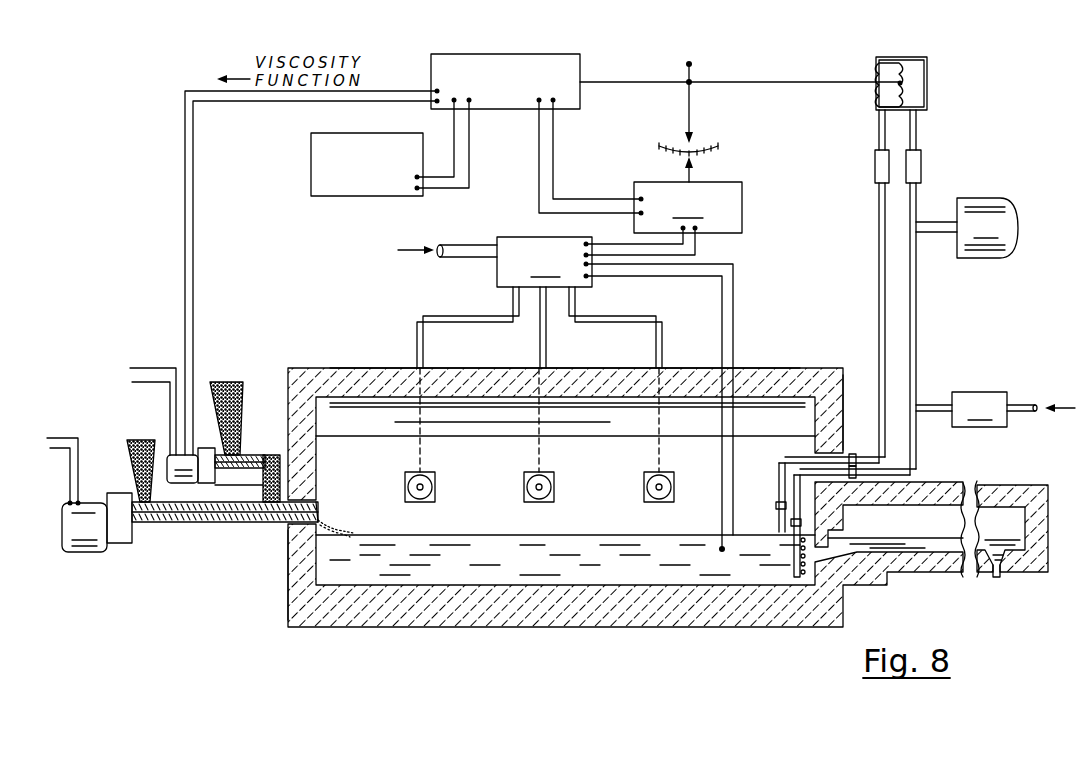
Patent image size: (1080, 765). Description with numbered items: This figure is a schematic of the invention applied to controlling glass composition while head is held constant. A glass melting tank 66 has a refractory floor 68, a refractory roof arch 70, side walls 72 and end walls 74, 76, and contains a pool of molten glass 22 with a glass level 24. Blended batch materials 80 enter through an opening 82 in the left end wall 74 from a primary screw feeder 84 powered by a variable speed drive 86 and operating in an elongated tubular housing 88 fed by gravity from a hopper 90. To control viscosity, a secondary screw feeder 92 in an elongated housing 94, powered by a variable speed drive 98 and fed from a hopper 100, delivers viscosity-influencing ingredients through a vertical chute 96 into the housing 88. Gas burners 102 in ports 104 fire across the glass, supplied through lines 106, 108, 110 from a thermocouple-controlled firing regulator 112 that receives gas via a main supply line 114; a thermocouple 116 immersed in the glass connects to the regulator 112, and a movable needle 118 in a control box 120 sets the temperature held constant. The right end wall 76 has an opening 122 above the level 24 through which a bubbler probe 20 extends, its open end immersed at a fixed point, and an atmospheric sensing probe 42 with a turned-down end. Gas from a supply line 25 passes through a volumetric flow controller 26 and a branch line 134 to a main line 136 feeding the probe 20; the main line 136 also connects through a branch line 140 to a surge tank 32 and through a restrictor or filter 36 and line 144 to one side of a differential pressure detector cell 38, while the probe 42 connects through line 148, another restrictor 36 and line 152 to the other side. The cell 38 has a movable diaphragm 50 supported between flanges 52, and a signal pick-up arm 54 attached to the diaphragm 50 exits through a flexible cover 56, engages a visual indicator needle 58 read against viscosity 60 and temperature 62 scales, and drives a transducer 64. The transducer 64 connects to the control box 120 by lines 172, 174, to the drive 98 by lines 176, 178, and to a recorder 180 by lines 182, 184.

The bubbler probe 20 is at (795, 575).
The pool of molten glass 22 is at (540, 569).
The glass level 24 is at (700, 535).
The supply line 25 is at (1025, 405).
The volumetric flow controller 26 is at (979, 409).
The surge tank 32 is at (987, 228).
The restrictor or filter 36 is at (922, 166).
The differential pressure detector cell 38 is at (932, 59).
The atmospheric sensing probe 42 is at (779, 505).
The movable diaphragm 50 is at (886, 65).
The flanges 52 is at (900, 58).
The signal pick-up arm 54 is at (790, 82).
The flexible cover 56 is at (877, 70).
The visual indicator needle 58 is at (689, 106).
The viscosity scale 60 is at (703, 150).
The temperature scale 62 is at (700, 152).
The transducer 64 is at (527, 54).
The glass melting tank 66 is at (773, 370).
The refractory floor 68 is at (565, 628).
The refractory roof arch 70 is at (332, 368).
The side walls 72 is at (367, 461).
The end wall 74 is at (288, 570).
The end wall 76 is at (850, 404).
The blended batch materials 80 is at (330, 527).
The opening 82 is at (318, 500).
The primary screw feeder 84 is at (185, 522).
The variable speed drive 86 is at (107, 553).
The elongated tubular housing 88 is at (225, 522).
The hopper 90 is at (118, 445).
The secondary screw feeder 92 is at (250, 455).
The elongated housing 94 is at (218, 425).
The vertical chute 96 is at (240, 470).
The variable speed drive 98 is at (200, 486).
The hopper 100 is at (238, 392).
The gas burners 102 is at (425, 485).
The ports 104 is at (436, 492).
The line 106 is at (424, 350).
The line 108 is at (540, 350).
The line 110 is at (635, 330).
The thermocouple-controlled firing regulator 112 is at (544, 262).
The main supply line 114 is at (460, 257).
The thermocouple 116 is at (716, 552).
The movable needle 118 is at (689, 172).
The control box 120 is at (664, 218).
The opening 122 is at (815, 460).
The branch line 134 is at (935, 415).
The main line 136 is at (916, 265).
The branch line 140 is at (930, 226).
The line 144 is at (917, 130).
The line 148 is at (879, 215).
The line 152 is at (879, 118).
The line 172 is at (539, 152).
The line 174 is at (554, 146).
The line 176 is at (185, 108).
The line 178 is at (195, 118).
The recorder 180 is at (311, 172).
The line 182 is at (454, 118).
The line 184 is at (470, 136).